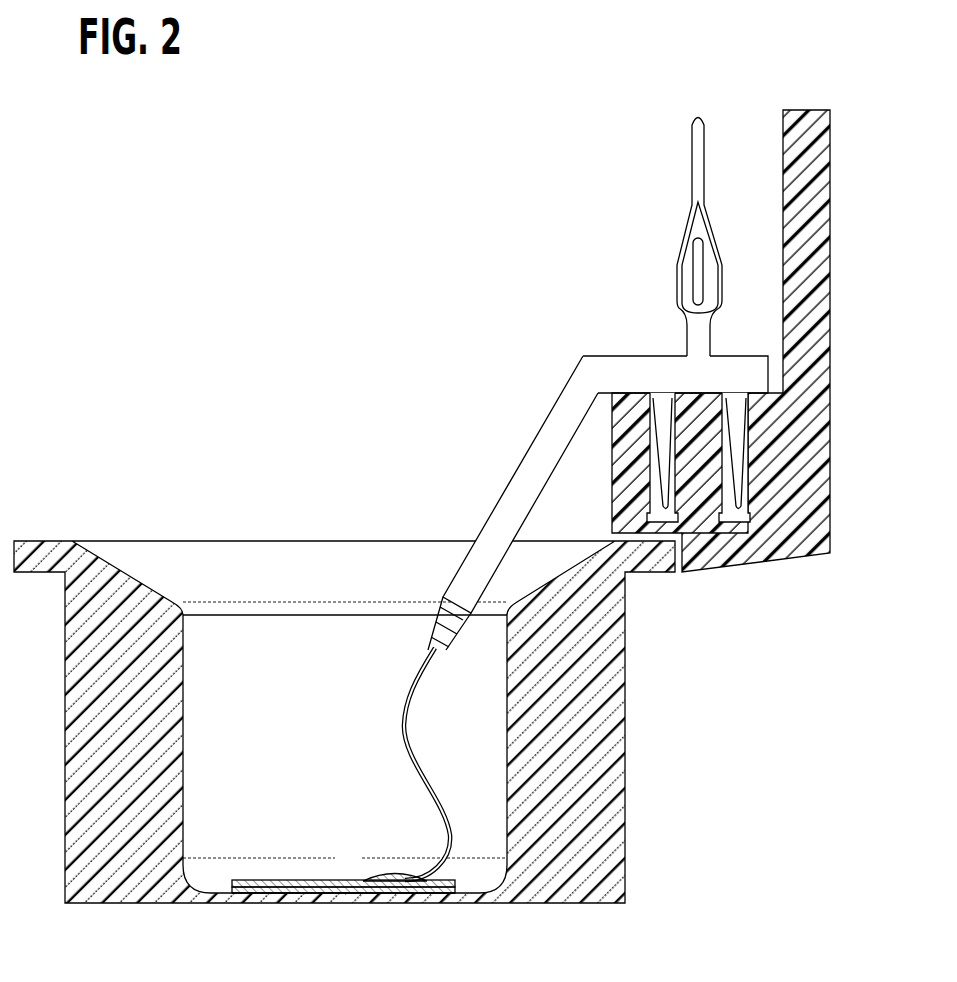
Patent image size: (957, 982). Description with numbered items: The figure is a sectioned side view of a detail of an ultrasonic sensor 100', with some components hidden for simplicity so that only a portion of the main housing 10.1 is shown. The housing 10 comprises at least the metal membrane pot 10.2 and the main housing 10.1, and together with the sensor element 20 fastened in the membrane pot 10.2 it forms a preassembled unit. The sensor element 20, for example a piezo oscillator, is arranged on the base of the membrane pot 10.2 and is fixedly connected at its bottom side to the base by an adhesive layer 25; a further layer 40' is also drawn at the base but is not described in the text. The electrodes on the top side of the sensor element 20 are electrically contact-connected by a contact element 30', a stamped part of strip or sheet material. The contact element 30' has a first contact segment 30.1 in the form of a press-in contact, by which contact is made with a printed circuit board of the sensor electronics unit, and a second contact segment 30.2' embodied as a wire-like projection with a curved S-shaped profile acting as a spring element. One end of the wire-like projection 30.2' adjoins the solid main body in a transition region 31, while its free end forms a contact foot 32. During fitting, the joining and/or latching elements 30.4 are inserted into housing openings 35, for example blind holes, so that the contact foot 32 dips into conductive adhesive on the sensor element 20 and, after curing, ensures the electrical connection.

The housing 10 is at (68, 513).
The main housing 10.1 is at (808, 258).
The membrane pot 10.2 is at (575, 832).
The sensor element 20 is at (270, 905).
The adhesive layer 25 is at (338, 905).
The contact element 30' is at (605, 431).
The first contact segment 30.1 is at (698, 162).
The second contact segment 30.2' is at (375, 764).
The joining elements and/or latching elements 30.4 is at (663, 458).
The transition region 31 is at (433, 605).
The contact foot 32 is at (413, 870).
The housing openings 35 is at (673, 515).
The connecting layer 40' is at (343, 936).
The ultrasonic sensor 100' is at (217, 286).